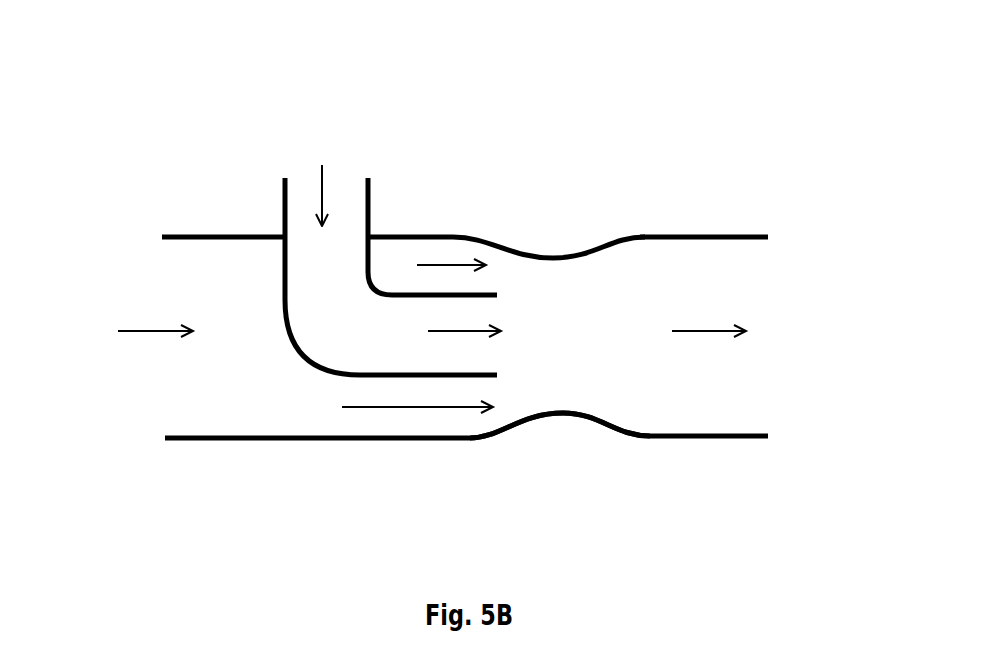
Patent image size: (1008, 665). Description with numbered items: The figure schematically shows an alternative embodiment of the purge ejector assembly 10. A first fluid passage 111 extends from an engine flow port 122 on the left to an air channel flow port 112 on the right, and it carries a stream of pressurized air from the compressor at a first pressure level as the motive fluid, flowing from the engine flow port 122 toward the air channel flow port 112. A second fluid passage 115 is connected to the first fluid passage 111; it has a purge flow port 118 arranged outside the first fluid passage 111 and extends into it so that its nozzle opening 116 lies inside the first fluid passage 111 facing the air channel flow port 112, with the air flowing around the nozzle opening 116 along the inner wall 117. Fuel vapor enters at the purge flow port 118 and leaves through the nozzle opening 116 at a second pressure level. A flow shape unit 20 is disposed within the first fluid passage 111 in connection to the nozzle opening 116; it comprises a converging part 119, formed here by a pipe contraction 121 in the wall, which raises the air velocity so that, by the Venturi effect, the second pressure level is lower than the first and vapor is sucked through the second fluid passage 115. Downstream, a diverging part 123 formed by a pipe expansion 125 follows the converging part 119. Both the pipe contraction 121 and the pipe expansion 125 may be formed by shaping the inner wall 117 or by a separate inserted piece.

The purge ejector assembly 10 is at (463, 286).
The flow shape unit 20 is at (552, 258).
The first fluid passage 111 is at (265, 410).
The air channel flow port 112 is at (743, 277).
The second fluid passage 115 is at (350, 205).
The nozzle opening 116 is at (488, 350).
The inner wall 117 is at (177, 436).
The purge flow port 118 is at (310, 183).
The converging part 119 is at (490, 482).
The pipe contraction 121 is at (517, 423).
The engine flow port 122 is at (175, 285).
The diverging part 123 is at (641, 482).
The pipe expansion 125 is at (603, 423).